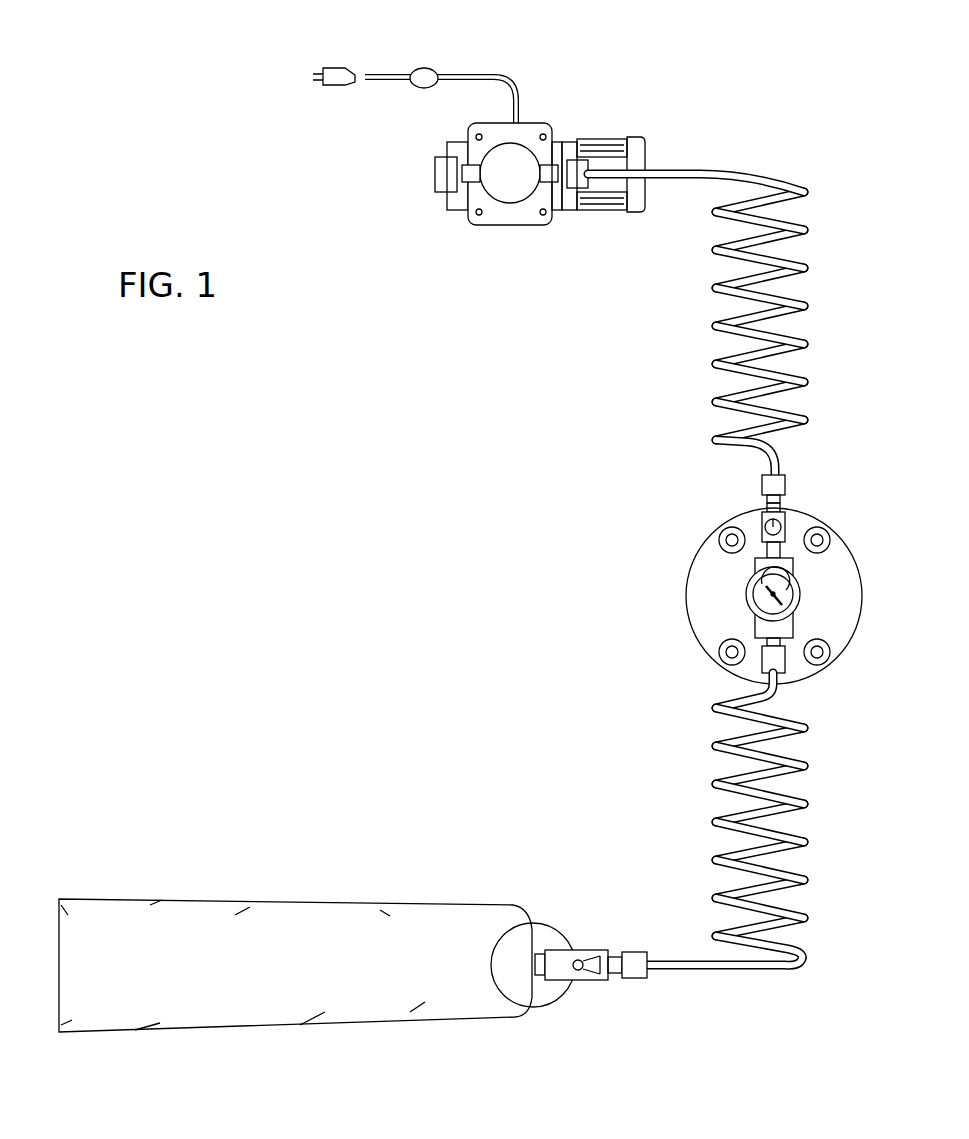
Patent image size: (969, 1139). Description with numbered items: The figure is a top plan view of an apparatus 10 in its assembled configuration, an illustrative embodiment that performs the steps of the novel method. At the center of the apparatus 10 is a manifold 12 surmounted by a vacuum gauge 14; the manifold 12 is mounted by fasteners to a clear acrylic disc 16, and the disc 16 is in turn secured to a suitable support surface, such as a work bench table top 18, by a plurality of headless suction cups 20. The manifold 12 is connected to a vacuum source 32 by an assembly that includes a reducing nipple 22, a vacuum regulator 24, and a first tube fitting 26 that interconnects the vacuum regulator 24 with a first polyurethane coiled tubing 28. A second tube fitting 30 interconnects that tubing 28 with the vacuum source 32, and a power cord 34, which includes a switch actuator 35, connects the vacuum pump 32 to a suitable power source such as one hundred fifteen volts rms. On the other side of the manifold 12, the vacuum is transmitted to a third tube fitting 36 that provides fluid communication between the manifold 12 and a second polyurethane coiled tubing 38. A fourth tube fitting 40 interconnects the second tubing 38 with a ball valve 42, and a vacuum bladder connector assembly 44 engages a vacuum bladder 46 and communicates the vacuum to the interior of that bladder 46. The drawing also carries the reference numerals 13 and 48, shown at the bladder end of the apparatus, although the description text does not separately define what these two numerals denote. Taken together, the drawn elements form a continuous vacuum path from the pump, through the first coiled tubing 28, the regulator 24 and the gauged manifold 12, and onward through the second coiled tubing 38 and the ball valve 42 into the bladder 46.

The apparatus 10 is at (740, 82).
The manifold 12 is at (755, 627).
The tank neck 13 is at (557, 1000).
The vacuum gauge 14 is at (748, 592).
The clear acrylic disc 16 is at (857, 563).
The work bench table top 18 is at (622, 347).
The headless suction cups 20 is at (723, 526).
The reducing nipple 22 is at (762, 556).
The vacuum regulator 24 is at (758, 520).
The first tube fitting 26 is at (786, 483).
The first polyurethane coiled tubing 28 is at (712, 250).
The second tube fitting 30 is at (582, 172).
The vacuum source 32 is at (530, 125).
The power cord 34 is at (460, 73).
The switch actuator 35 is at (418, 70).
The third tube fitting 36 is at (762, 660).
The second polyurethane coiled tubing 38 is at (716, 815).
The fourth tube fitting 40 is at (634, 978).
The ball valve 42 is at (588, 950).
The vacuum bladder connector assembly 44 is at (535, 938).
The vacuum bladder 46 is at (295, 899).
The tank assembly 48 is at (92, 891).